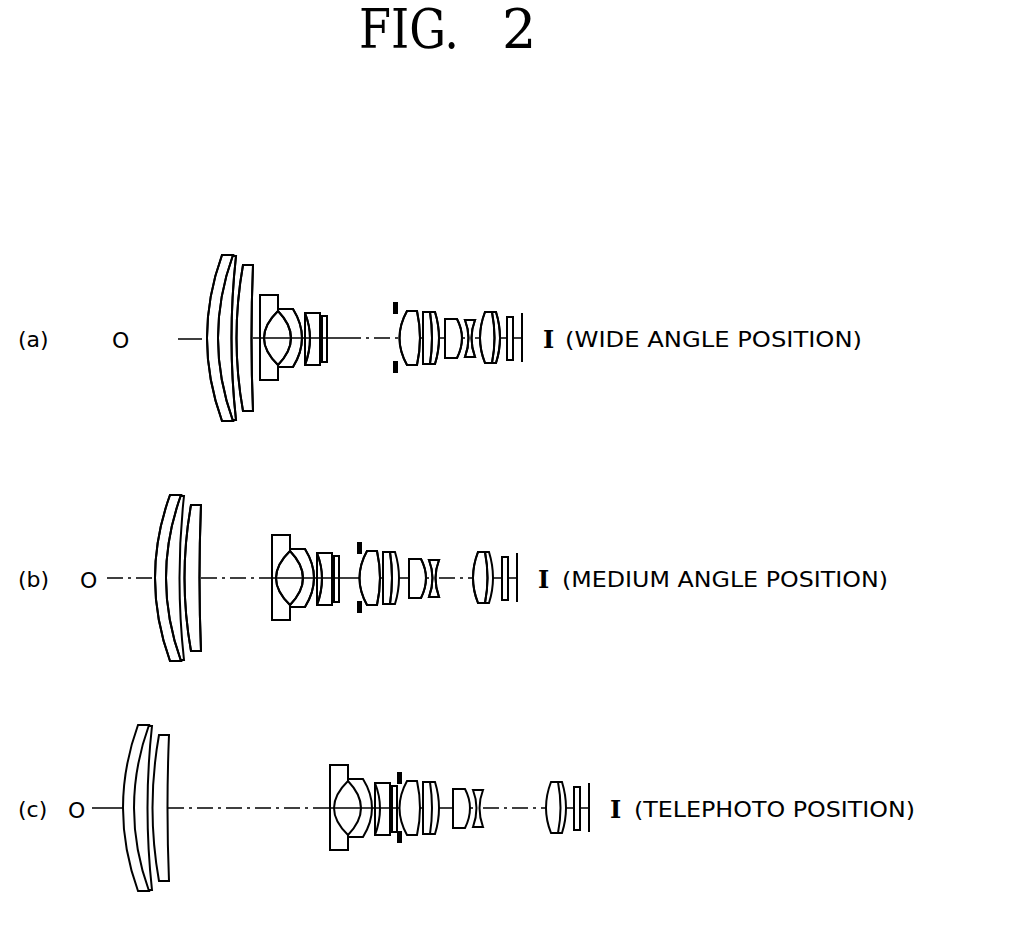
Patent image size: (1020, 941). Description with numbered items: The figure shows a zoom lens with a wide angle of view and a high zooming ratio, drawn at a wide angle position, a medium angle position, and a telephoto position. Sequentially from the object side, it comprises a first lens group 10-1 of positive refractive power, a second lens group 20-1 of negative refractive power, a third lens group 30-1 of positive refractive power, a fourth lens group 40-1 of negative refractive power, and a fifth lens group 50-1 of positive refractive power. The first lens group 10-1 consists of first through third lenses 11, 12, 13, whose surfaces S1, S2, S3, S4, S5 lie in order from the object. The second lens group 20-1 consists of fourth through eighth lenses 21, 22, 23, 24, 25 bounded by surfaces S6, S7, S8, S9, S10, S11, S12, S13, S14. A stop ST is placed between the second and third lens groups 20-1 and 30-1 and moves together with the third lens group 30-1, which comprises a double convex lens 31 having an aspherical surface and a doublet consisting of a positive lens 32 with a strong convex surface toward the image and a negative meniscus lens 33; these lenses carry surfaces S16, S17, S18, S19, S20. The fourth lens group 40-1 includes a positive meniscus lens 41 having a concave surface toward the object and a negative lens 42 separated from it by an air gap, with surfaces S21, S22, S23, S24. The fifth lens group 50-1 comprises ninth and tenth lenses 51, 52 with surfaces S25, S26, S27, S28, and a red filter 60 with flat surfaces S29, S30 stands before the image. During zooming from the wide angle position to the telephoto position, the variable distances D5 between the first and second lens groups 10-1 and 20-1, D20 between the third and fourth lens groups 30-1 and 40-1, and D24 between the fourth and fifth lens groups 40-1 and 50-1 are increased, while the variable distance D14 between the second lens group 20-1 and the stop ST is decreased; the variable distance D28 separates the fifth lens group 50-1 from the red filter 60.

The first lens group 10-1 is at (253, 222).
The second lens group 20-1 is at (317, 222).
The third lens group 30-1 is at (438, 222).
The fourth lens group 40-1 is at (442, 222).
The fifth lens group 50-1 is at (498, 222).
The first lens 11 is at (218, 292).
The second lens 12 is at (225, 313).
The third lens 13 is at (240, 348).
The fourth lens 21 is at (271, 295).
The fifth lens 22 is at (286, 315).
The sixth lens 23 is at (302, 313).
The seventh lens 24 is at (313, 318).
The eighth lens 25 is at (322, 320).
The double convex lens 31 is at (406, 317).
The positive lens 32 is at (428, 316).
The negative meniscus lens 33 is at (437, 316).
The positive meniscus lens 41 is at (450, 320).
The negative lens 42 is at (470, 322).
The ninth lens 51 is at (488, 316).
The tenth lens 52 is at (502, 316).
The red filter 60 is at (513, 316).
The stop ST is at (396, 368).
The variable distance D5 is at (264, 373).
The variable distance D14 is at (340, 340).
The variable distance D20 is at (437, 363).
The variable distance D24 is at (480, 353).
The variable distance D28 is at (505, 357).
The lens surface S1 is at (160, 612).
The lens surface S2 is at (164, 626).
The lens surface S3 is at (168, 656).
The lens surface S4 is at (185, 552).
The lens surface S5 is at (207, 642).
The lens surface S6 is at (271, 608).
The lens surface S7 is at (281, 616).
The lens surface S8 is at (278, 610).
The lens surface S9 is at (283, 562).
The lens surface S10 is at (283, 543).
The lens surface S11 is at (308, 608).
The lens surface S12 is at (352, 612).
The lens surface S13 is at (321, 556).
The lens surface S14 is at (336, 555).
The lens surface S16 is at (362, 609).
The lens surface S17 is at (397, 605).
The lens surface S18 is at (372, 553).
The lens surface S19 is at (387, 556).
The lens surface S20 is at (403, 604).
The lens surface S21 is at (397, 556).
The lens surface S22 is at (413, 597).
The lens surface S23 is at (423, 556).
The lens surface S24 is at (438, 556).
The lens surface S25 is at (474, 597).
The lens surface S26 is at (478, 603).
The lens surface S27 is at (490, 597).
The lens surface S28 is at (483, 556).
The lens surface S29 is at (500, 556).
The lens surface S30 is at (515, 567).